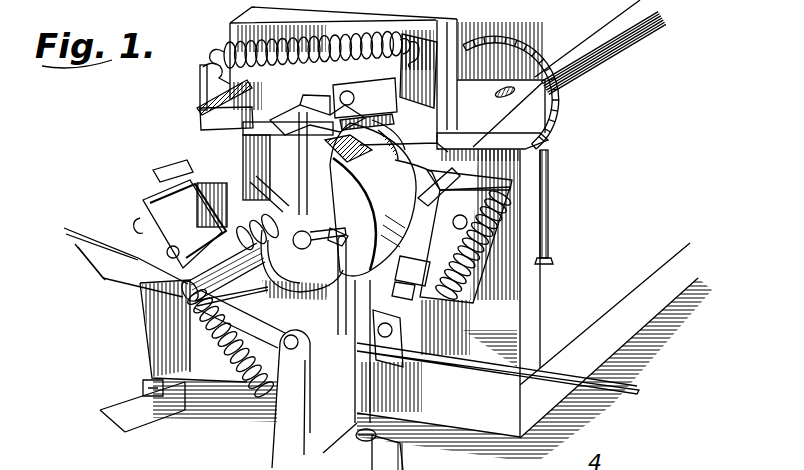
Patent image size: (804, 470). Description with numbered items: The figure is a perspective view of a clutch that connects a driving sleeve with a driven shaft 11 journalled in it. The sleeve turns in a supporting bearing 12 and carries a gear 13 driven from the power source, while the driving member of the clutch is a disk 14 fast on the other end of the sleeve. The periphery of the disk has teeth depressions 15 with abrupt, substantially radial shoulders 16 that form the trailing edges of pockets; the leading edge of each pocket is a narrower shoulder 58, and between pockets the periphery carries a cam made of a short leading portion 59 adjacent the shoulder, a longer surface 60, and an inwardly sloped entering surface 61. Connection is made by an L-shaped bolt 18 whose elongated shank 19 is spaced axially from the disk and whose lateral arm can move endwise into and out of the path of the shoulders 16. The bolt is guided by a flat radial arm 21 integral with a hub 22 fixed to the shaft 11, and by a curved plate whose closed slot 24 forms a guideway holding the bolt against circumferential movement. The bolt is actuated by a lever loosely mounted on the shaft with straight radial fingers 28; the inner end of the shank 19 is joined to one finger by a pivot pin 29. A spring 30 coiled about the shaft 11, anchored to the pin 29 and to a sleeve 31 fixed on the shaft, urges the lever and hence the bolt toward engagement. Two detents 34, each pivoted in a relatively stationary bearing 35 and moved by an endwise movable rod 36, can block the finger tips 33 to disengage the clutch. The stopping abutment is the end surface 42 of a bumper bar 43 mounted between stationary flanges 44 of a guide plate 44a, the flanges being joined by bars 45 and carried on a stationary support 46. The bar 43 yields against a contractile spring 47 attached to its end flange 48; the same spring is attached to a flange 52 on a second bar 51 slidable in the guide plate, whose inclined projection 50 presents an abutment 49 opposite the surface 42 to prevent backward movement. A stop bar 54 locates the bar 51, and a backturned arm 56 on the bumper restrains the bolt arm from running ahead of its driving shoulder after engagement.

The driven shaft 11 is at (647, 33).
The supporting bearing 12 is at (548, 130).
The gear 13 is at (532, 72).
The disk 14 is at (318, 300).
The peripheral teeth depressions 15 is at (222, 212).
The abrupt shoulders 16 is at (396, 140).
The L-shaped bolt 18 is at (300, 135).
The shank 19 is at (284, 188).
The radial arm 21 is at (297, 152).
The hub 22 is at (338, 230).
The closed slot 24 is at (243, 150).
The fingers 28 is at (188, 168).
The pivot pin 29 is at (292, 261).
The spring 30 is at (240, 230).
The sleeve 31 is at (240, 293).
The finger tips 33 is at (346, 232).
The detents 34 is at (170, 290).
The bearing 35 is at (136, 359).
The rod 36 is at (497, 370).
The end surface 42 is at (345, 92).
The bumper bar 43 is at (166, 190).
The flanges 44 is at (398, 44).
The guide plate 44a is at (201, 120).
The bars 45 is at (440, 90).
The stationary support 46 is at (272, 27).
The contractile spring 47 is at (496, 276).
The end flange 48 is at (420, 60).
The abutment 49 is at (300, 115).
The inclined projection 50 is at (446, 226).
The bar 51 is at (200, 104).
The flange 52 is at (203, 65).
The stop bar 54 is at (217, 90).
The backturned arm 56 is at (414, 286).
The shoulder 58 is at (367, 206).
The leading portion 59 is at (392, 124).
The longer surface 60 is at (373, 199).
The entering slope 61 is at (402, 160).